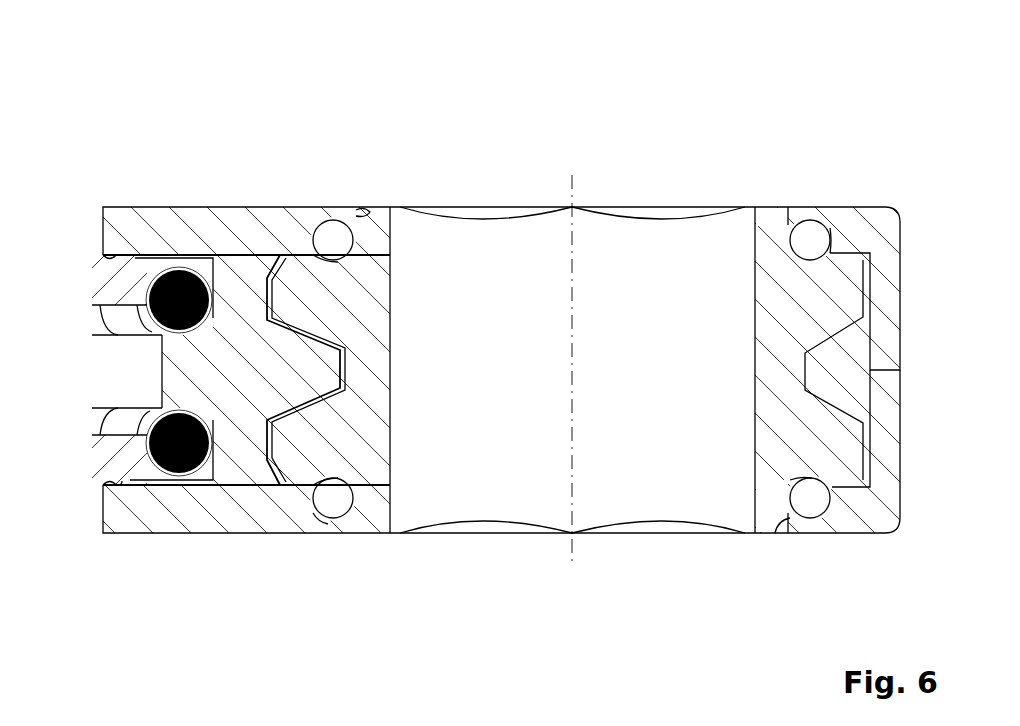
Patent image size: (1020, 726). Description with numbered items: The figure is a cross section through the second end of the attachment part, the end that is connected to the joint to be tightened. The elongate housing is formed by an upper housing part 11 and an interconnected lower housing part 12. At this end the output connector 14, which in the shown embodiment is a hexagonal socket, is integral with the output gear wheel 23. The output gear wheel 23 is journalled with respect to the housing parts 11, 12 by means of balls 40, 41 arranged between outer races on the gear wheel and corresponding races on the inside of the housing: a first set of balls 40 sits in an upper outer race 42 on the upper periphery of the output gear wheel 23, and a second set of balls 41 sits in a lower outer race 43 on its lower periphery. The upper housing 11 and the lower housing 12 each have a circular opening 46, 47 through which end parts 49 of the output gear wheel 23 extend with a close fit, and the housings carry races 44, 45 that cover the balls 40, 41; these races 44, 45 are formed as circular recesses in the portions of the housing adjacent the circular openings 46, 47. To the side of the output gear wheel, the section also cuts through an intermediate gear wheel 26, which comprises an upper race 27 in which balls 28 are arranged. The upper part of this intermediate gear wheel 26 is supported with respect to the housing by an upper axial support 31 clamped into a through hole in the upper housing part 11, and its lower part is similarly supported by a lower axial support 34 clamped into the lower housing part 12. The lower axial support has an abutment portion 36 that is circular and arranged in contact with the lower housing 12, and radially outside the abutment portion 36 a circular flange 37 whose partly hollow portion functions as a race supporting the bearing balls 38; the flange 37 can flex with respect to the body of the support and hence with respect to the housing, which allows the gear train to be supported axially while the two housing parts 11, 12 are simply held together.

The upper housing part 11 is at (148, 227).
The lower housing part 12 is at (177, 517).
The output connector 14 is at (755, 277).
The output gear wheel 23 is at (838, 290).
The intermediate gear wheel 26 is at (233, 458).
The upper race 27 is at (214, 320).
The balls 28 is at (183, 268).
The upper axial support 31 is at (102, 282).
The lower axial support 34 is at (103, 455).
The abutment portion 36 is at (120, 493).
The circular flange 37 is at (188, 482).
The bearing balls 38 is at (157, 413).
The balls (first set) 40 is at (327, 230).
The balls (second set) 41 is at (333, 508).
The upper outer race 42 is at (364, 258).
The lower outer race 43 is at (358, 473).
The race 44 is at (831, 222).
The race 45 is at (308, 514).
The circular opening 46 is at (370, 205).
The circular opening 47 is at (780, 522).
The end parts 49 is at (772, 217).